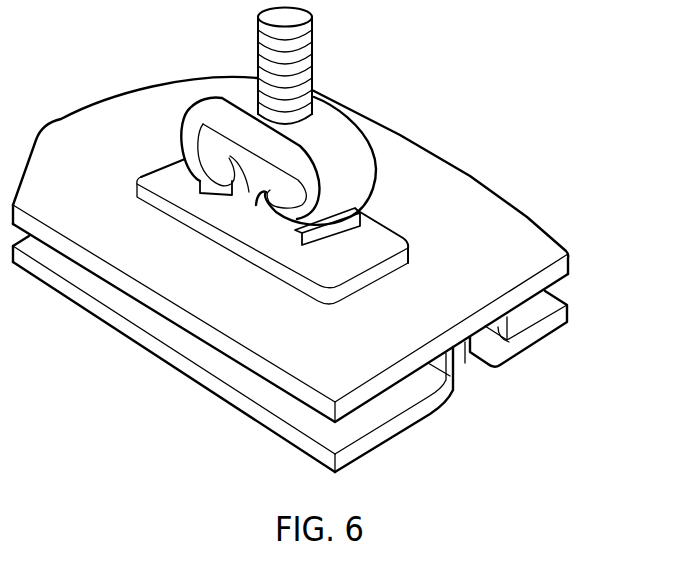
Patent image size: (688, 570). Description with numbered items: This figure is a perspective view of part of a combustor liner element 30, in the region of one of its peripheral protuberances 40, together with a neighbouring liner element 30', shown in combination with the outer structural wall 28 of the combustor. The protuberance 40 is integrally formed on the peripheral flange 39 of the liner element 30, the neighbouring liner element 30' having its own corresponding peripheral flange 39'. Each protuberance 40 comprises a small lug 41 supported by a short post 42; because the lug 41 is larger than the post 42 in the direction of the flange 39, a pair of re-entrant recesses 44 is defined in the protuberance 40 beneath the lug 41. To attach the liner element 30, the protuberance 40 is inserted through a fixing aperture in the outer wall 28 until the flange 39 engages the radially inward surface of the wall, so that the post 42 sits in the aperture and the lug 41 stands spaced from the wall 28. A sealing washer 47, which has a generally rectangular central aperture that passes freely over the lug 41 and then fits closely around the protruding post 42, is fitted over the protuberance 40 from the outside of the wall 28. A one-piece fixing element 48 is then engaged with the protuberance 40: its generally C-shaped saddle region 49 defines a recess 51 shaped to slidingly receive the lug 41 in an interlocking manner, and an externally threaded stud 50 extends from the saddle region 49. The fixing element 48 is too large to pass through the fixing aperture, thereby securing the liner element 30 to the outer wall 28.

The outer structural wall 28 is at (531, 240).
The liner element 30 is at (237, 371).
The neighbouring liner element 30' is at (552, 342).
The peripheral flange 39 is at (489, 394).
The peripheral flange 39' is at (533, 367).
The protuberance 40 is at (158, 141).
The lug 41 is at (273, 174).
The post 42 is at (200, 127).
The re-entrant recesses 44 is at (266, 194).
The sealing washer 47 is at (370, 257).
The fixing element 48 is at (325, 107).
The saddle region 49 is at (310, 134).
The externally threaded stud 50 is at (307, 50).
The recess 51 is at (247, 138).